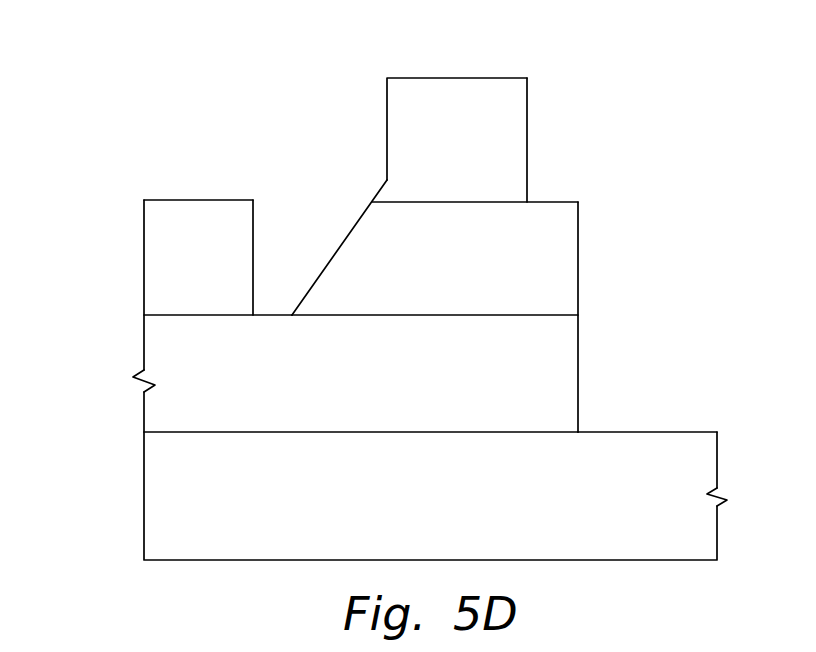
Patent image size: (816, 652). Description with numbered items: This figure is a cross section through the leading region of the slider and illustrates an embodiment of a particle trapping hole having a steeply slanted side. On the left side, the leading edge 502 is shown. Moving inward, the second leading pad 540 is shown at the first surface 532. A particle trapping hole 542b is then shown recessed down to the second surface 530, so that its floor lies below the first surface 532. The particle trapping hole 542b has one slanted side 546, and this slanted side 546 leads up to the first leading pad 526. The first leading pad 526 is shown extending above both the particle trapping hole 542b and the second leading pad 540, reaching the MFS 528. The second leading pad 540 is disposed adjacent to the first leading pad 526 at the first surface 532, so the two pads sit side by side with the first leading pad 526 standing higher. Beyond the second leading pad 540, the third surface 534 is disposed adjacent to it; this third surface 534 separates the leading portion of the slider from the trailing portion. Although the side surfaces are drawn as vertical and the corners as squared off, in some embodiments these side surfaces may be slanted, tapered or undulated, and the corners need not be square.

The leading edge 502 is at (110, 249).
The first leading pad 526 is at (413, 77).
The MFS 528 is at (505, 77).
The second surface 530 is at (300, 296).
The first surface 532 is at (170, 198).
The third surface 534 is at (651, 382).
The second leading pad 540 is at (228, 198).
The particle trapping hole 542b is at (319, 208).
The slanted side 546 is at (339, 245).